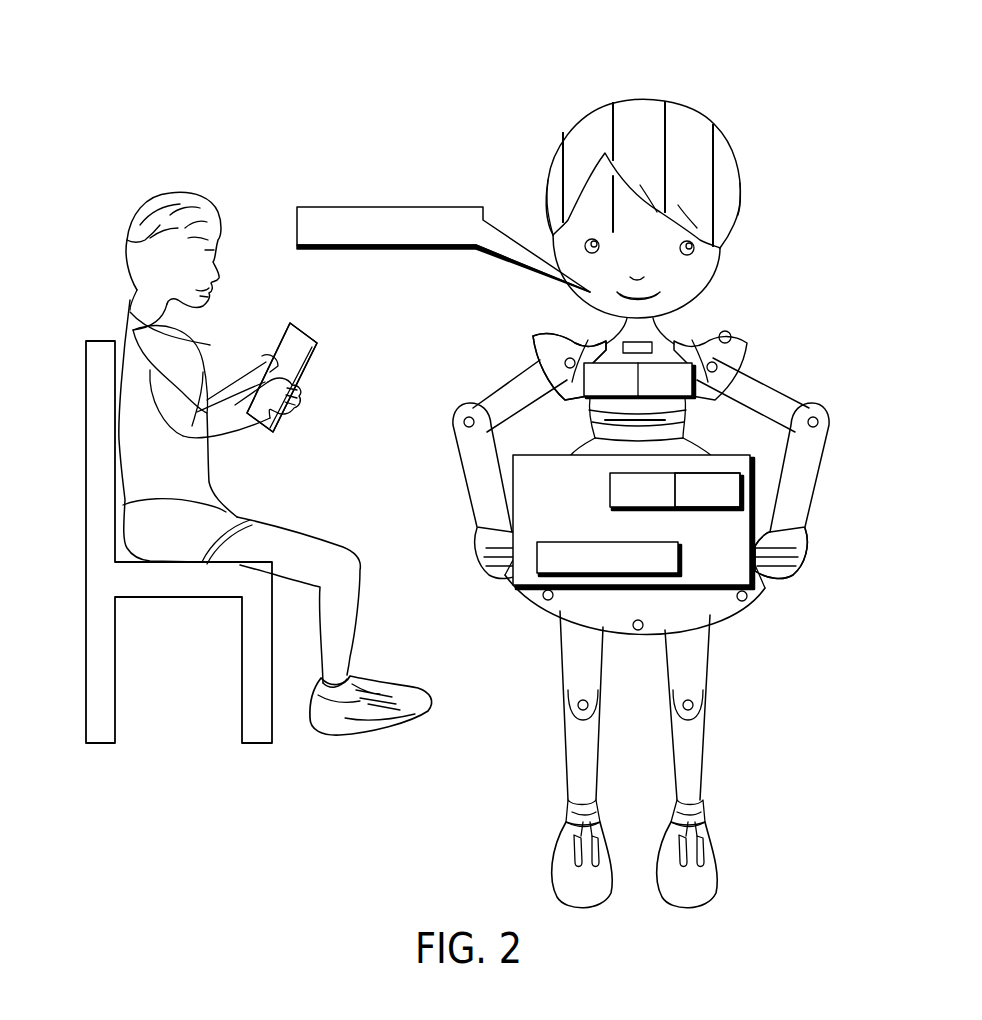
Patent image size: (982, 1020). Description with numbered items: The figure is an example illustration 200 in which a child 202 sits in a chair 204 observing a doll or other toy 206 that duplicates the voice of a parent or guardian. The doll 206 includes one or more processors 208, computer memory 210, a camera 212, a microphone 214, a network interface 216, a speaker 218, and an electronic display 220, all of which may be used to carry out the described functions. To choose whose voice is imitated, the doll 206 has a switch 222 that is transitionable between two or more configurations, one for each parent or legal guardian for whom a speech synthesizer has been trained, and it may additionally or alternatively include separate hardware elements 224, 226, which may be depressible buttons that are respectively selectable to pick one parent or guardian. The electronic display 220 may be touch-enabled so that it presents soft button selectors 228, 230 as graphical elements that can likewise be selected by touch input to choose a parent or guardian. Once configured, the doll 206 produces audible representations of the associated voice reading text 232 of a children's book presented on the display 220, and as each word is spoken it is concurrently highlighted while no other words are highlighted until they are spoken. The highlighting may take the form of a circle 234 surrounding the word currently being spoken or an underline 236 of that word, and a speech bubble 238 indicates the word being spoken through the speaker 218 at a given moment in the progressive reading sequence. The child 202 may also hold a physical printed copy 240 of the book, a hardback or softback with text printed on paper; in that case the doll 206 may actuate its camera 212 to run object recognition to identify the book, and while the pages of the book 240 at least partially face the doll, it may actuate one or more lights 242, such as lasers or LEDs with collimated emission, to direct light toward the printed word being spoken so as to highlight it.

The example illustration 200 is at (150, 51).
The child 202 is at (160, 192).
The chair 204 is at (85, 527).
The doll 206 is at (702, 768).
The processors 208 is at (638, 100).
The computer memory 210 is at (598, 110).
The camera 212 is at (548, 181).
The microphone 214 is at (686, 118).
The network interface 216 is at (740, 183).
The speaker 218 is at (680, 298).
The electronic display 220 is at (786, 530).
The switch 222 is at (732, 337).
The hardware element 224 is at (575, 380).
The hardware element 226 is at (658, 365).
The soft button selector 228 is at (610, 490).
The soft button selector 230 is at (730, 474).
The text 232 is at (620, 522).
The circle 234 is at (536, 555).
The underline 236 is at (537, 574).
The speech bubble 238 is at (352, 206).
The physical printed copy 240 is at (300, 325).
The lights 242 is at (600, 338).